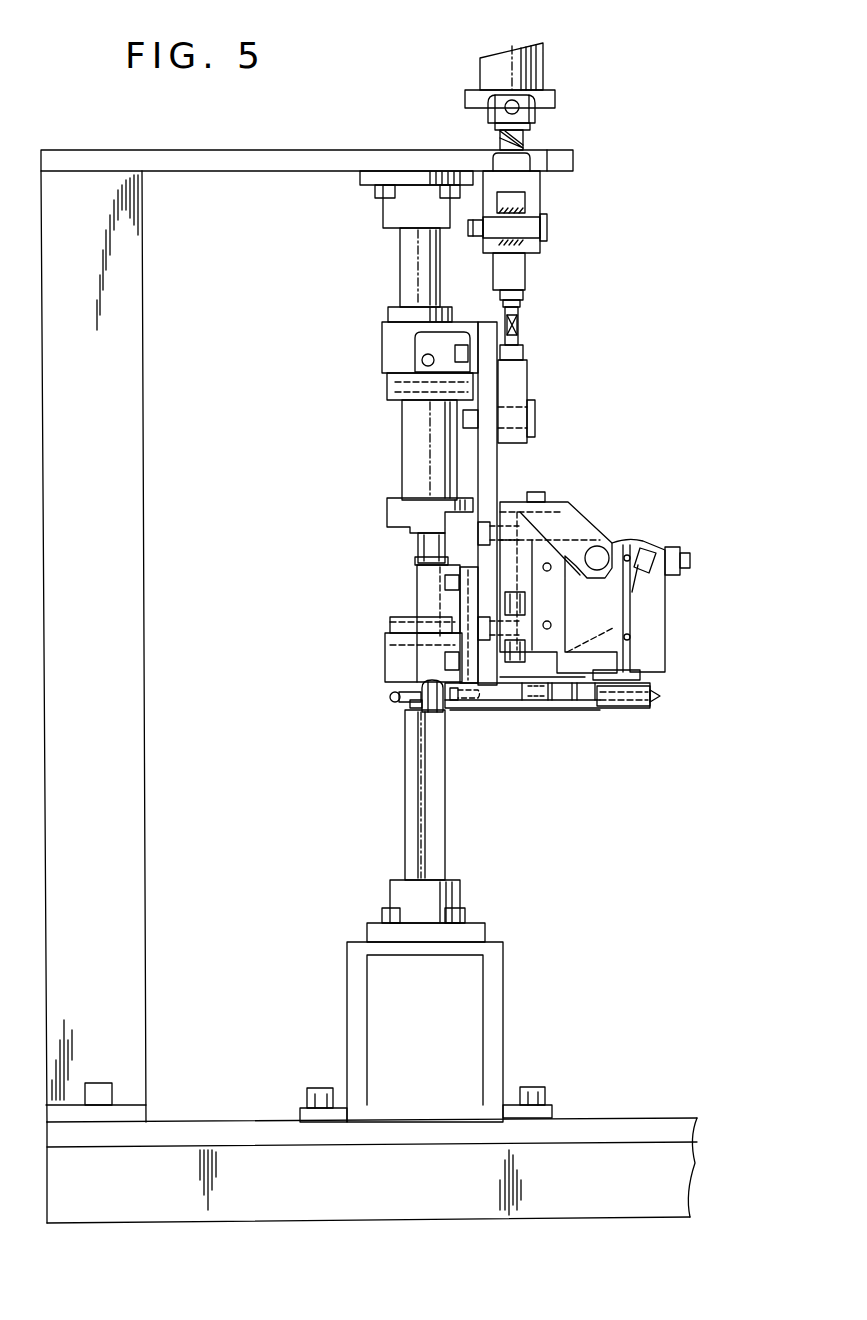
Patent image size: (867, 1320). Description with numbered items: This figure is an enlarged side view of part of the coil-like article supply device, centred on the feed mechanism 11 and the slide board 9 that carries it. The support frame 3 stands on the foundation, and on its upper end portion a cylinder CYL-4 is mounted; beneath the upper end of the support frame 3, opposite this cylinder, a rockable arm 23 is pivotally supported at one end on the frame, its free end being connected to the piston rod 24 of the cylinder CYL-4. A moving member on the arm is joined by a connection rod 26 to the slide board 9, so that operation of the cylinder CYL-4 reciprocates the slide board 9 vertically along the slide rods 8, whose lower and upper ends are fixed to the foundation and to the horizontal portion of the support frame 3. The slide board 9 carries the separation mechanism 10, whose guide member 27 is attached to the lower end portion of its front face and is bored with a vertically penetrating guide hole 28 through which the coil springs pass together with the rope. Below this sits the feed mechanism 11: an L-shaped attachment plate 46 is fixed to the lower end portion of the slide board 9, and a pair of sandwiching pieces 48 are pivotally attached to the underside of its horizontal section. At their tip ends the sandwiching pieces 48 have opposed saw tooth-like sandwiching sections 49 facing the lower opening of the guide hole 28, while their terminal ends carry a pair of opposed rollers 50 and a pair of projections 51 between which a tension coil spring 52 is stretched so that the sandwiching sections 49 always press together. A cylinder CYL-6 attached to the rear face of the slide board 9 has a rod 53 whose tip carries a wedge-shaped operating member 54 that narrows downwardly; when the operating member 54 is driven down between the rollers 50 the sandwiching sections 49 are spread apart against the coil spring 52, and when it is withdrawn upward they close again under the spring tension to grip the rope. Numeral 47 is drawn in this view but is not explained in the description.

The support frame 3 is at (50, 512).
The cylinder CYL-4 is at (647, 64).
The piston rod 24 is at (528, 129).
The rockable arm 23 is at (539, 188).
The connection rod 26 is at (522, 340).
The slide board 9 is at (497, 462).
The cylinder CYL-6 is at (410, 280).
The rod 53 is at (418, 549).
The operating member 54 is at (417, 668).
The tension coil spring 52 is at (389, 697).
The projections 51 is at (415, 703).
The rollers 50 is at (433, 712).
The slide rods 8 is at (410, 783).
The feed mechanism 11 is at (473, 715).
The element 47 is at (542, 700).
The L-shaped attachment plate 46 is at (552, 700).
The sandwiching pieces 48 is at (577, 700).
The sandwiching sections 49 is at (658, 696).
The guide hole 28 is at (630, 610).
The guide member 27 is at (660, 620).
The separation mechanism 10 is at (672, 592).